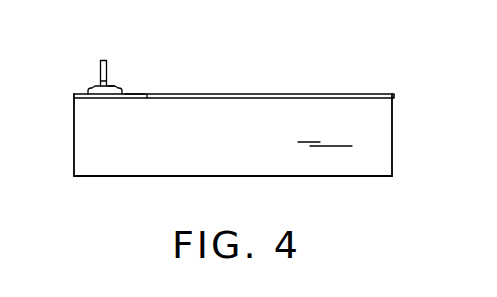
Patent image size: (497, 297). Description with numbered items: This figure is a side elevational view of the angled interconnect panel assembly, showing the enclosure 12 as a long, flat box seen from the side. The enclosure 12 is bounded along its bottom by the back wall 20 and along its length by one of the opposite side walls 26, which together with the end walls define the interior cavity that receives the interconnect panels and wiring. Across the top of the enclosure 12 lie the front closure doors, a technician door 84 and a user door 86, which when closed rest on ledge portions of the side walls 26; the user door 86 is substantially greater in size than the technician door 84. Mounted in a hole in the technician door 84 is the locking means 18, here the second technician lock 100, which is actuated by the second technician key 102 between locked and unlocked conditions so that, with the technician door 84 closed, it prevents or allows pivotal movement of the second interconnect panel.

The enclosure 12 is at (395, 100).
The locking means 18 is at (111, 83).
The back wall 20 is at (293, 178).
The side walls 26 is at (382, 148).
The technician door 84 is at (134, 93).
The user door 86 is at (289, 94).
The second technician lock 100 is at (88, 90).
The second technician key 102 is at (100, 83).